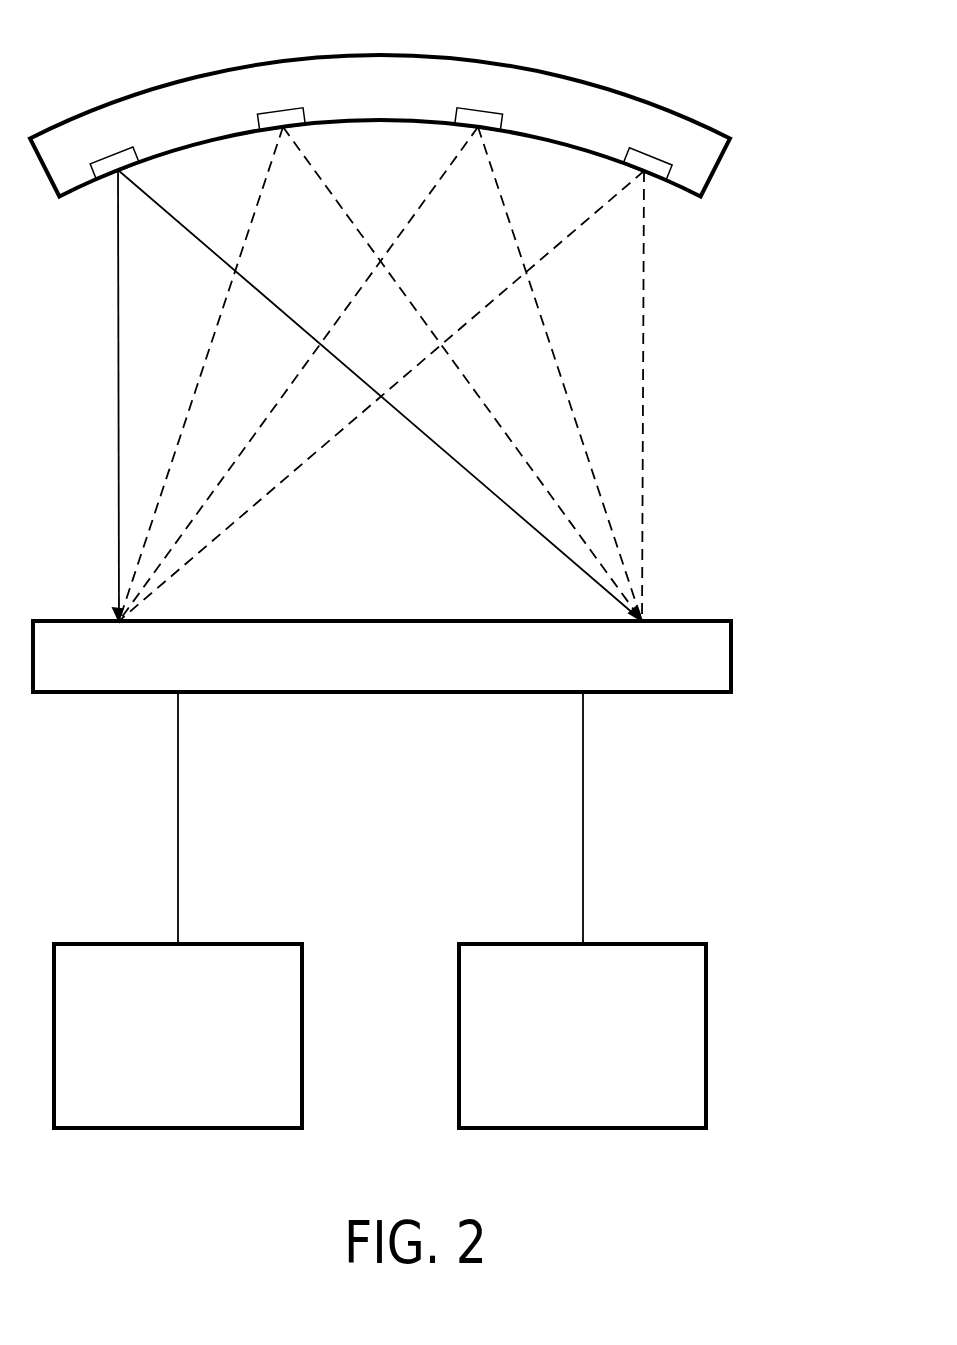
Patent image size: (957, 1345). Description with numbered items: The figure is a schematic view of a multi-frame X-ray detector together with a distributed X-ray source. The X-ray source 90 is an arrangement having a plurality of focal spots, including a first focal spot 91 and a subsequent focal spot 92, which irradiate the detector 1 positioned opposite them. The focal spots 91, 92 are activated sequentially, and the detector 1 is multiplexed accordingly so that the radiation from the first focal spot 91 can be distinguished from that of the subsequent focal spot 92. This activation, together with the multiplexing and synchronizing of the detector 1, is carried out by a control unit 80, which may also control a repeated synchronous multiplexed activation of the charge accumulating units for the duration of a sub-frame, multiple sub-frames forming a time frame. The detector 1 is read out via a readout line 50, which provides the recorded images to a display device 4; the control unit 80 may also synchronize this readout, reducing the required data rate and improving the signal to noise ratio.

The detector 1 is at (713, 655).
The display device 4 is at (692, 1027).
The readout line 50 is at (583, 813).
The control unit 80 is at (283, 1027).
The X-ray source 90 is at (597, 110).
The first focal spot 91 is at (117, 162).
The subsequent focal spot 92 is at (280, 112).